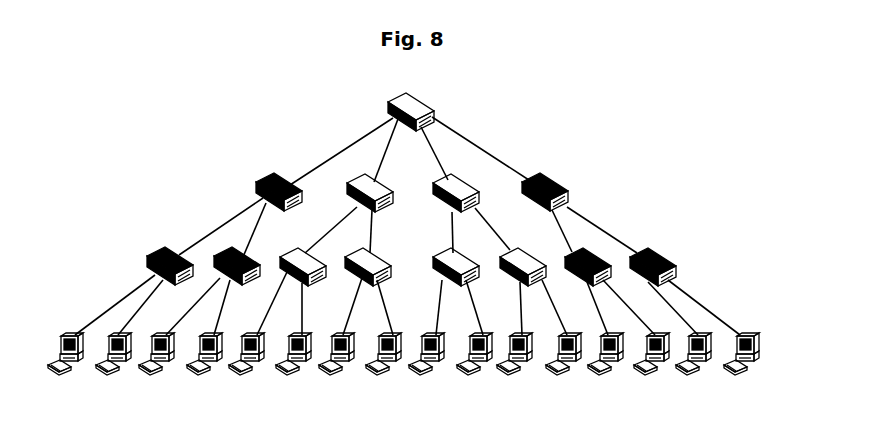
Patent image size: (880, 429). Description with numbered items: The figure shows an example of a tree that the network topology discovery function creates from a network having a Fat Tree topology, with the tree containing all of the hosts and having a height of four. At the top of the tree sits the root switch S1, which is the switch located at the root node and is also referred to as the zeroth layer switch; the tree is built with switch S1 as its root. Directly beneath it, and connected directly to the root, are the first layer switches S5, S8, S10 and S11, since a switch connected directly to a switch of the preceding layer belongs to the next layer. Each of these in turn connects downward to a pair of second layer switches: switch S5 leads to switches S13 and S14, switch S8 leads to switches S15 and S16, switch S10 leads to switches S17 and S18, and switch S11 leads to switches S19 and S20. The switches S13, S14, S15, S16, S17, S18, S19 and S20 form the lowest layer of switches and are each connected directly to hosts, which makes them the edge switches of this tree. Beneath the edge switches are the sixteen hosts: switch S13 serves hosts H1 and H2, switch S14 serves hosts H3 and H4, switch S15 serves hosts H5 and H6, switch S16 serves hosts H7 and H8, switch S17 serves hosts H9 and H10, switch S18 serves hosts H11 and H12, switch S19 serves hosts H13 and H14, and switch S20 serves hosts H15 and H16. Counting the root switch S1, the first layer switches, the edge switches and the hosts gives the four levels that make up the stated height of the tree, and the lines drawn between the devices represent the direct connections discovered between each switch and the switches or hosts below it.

The root switch S1 is at (396, 111).
The switch S5 is at (268, 188).
The switch S8 is at (370, 184).
The switch S10 is at (463, 186).
The switch S11 is at (558, 188).
The switch S13 is at (153, 258).
The switch S14 is at (234, 258).
The switch S15 is at (303, 260).
The switch S16 is at (363, 260).
The switch S17 is at (446, 260).
The switch S18 is at (511, 259).
The switch S19 is at (573, 259).
The switch S20 is at (653, 257).
The host H1 is at (65, 367).
The host H2 is at (113, 367).
The host H3 is at (156, 367).
The host H4 is at (204, 367).
The host H5 is at (246, 367).
The host H6 is at (293, 367).
The host H7 is at (336, 367).
The host H8 is at (383, 367).
The host H9 is at (426, 367).
The host H10 is at (475, 367).
The host H11 is at (515, 367).
The host H12 is at (563, 367).
The host H13 is at (606, 367).
The host H14 is at (652, 367).
The host H15 is at (693, 367).
The host H16 is at (741, 367).